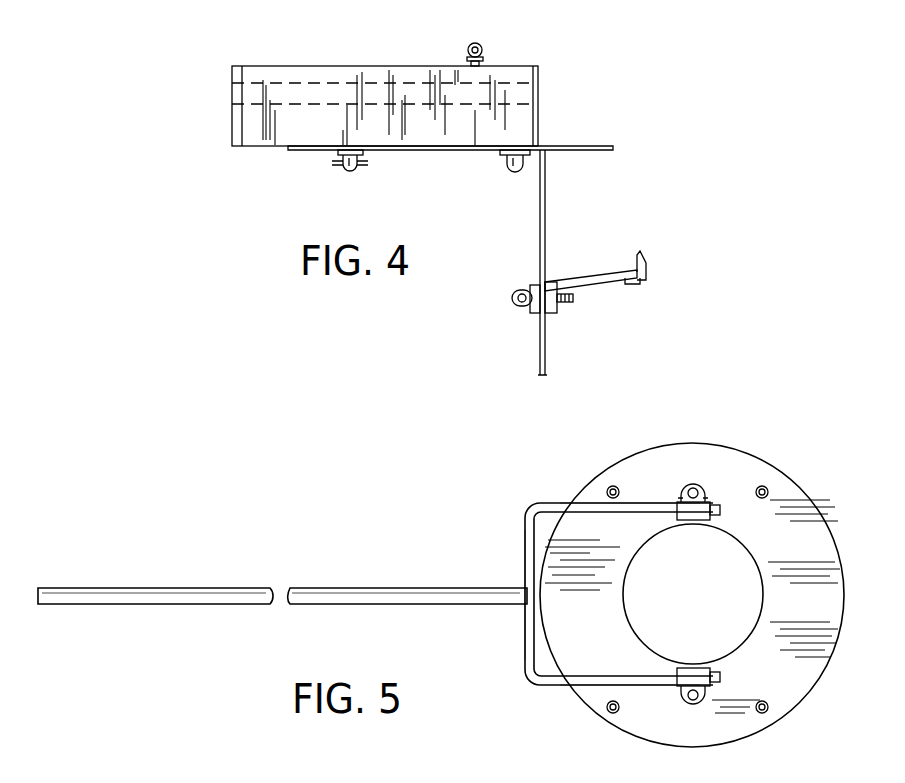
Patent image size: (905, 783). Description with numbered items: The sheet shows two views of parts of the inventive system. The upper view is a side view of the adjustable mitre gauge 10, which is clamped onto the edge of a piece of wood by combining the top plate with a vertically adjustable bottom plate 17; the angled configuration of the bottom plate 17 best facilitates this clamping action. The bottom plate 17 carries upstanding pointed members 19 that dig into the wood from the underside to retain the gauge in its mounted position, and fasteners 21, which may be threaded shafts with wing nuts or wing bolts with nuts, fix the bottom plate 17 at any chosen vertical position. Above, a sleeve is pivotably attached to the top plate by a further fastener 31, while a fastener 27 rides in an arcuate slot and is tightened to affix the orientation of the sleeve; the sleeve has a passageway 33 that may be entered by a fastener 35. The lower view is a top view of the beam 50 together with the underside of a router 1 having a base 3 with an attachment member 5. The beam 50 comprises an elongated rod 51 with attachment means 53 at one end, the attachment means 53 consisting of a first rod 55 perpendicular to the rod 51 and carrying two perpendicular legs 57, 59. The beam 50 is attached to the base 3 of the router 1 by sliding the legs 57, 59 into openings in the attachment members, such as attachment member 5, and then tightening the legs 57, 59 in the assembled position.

In FIG. 5, the router 1 is at (699, 414).
In FIG. 5, the base 3 is at (805, 500).
In FIG. 5, the attachment member 5 is at (708, 494).
In FIG. 4, the adjustable mitre gauge 10 is at (596, 106).
In FIG. 4, the bottom plate 17 is at (613, 283).
In FIG. 5, the bottom plate 17 is at (703, 597).
In FIG. 4, the upstanding pointed members 19 is at (645, 266).
In FIG. 4, the fasteners 21 is at (516, 300).
In FIG. 4, the fastener 27 is at (346, 168).
In FIG. 4, the further fastener 31 is at (510, 168).
In FIG. 4, the passageway 33 is at (306, 85).
In FIG. 4, the fastener 35 is at (483, 52).
In FIG. 5, the beam 50 is at (368, 576).
In FIG. 5, the elongated rod 51 is at (134, 590).
In FIG. 5, the attachment means 53 is at (528, 502).
In FIG. 5, the first rod 55 is at (524, 540).
In FIG. 5, the leg 57 is at (556, 684).
In FIG. 5, the leg 59 is at (552, 503).